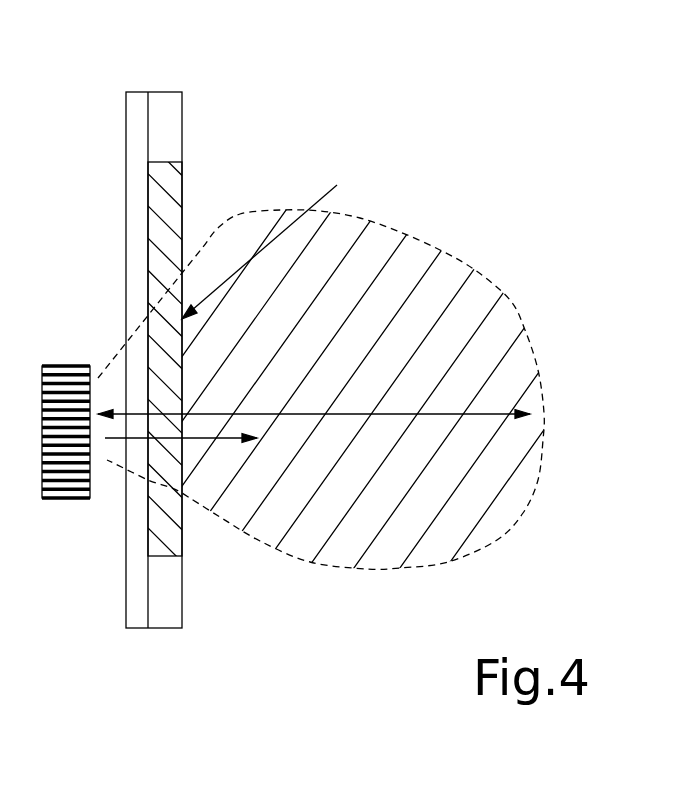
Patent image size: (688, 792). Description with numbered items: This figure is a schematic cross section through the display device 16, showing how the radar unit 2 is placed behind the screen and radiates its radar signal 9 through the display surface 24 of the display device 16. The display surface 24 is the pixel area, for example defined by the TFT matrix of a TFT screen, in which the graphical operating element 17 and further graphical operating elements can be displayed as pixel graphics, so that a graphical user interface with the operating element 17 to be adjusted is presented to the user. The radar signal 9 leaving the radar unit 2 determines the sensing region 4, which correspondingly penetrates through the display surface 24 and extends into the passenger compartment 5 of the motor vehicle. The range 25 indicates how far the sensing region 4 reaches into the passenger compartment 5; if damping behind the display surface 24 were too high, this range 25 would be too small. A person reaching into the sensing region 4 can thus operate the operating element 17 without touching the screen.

The display device 16 is at (164, 92).
The display surface 24 is at (183, 200).
The radar unit 2 is at (65, 366).
The sensing region 4 is at (455, 258).
The passenger compartment 5 is at (559, 185).
The graphical operating element 17 is at (273, 234).
The range 25 is at (481, 413).
The radar signal 9 is at (227, 442).